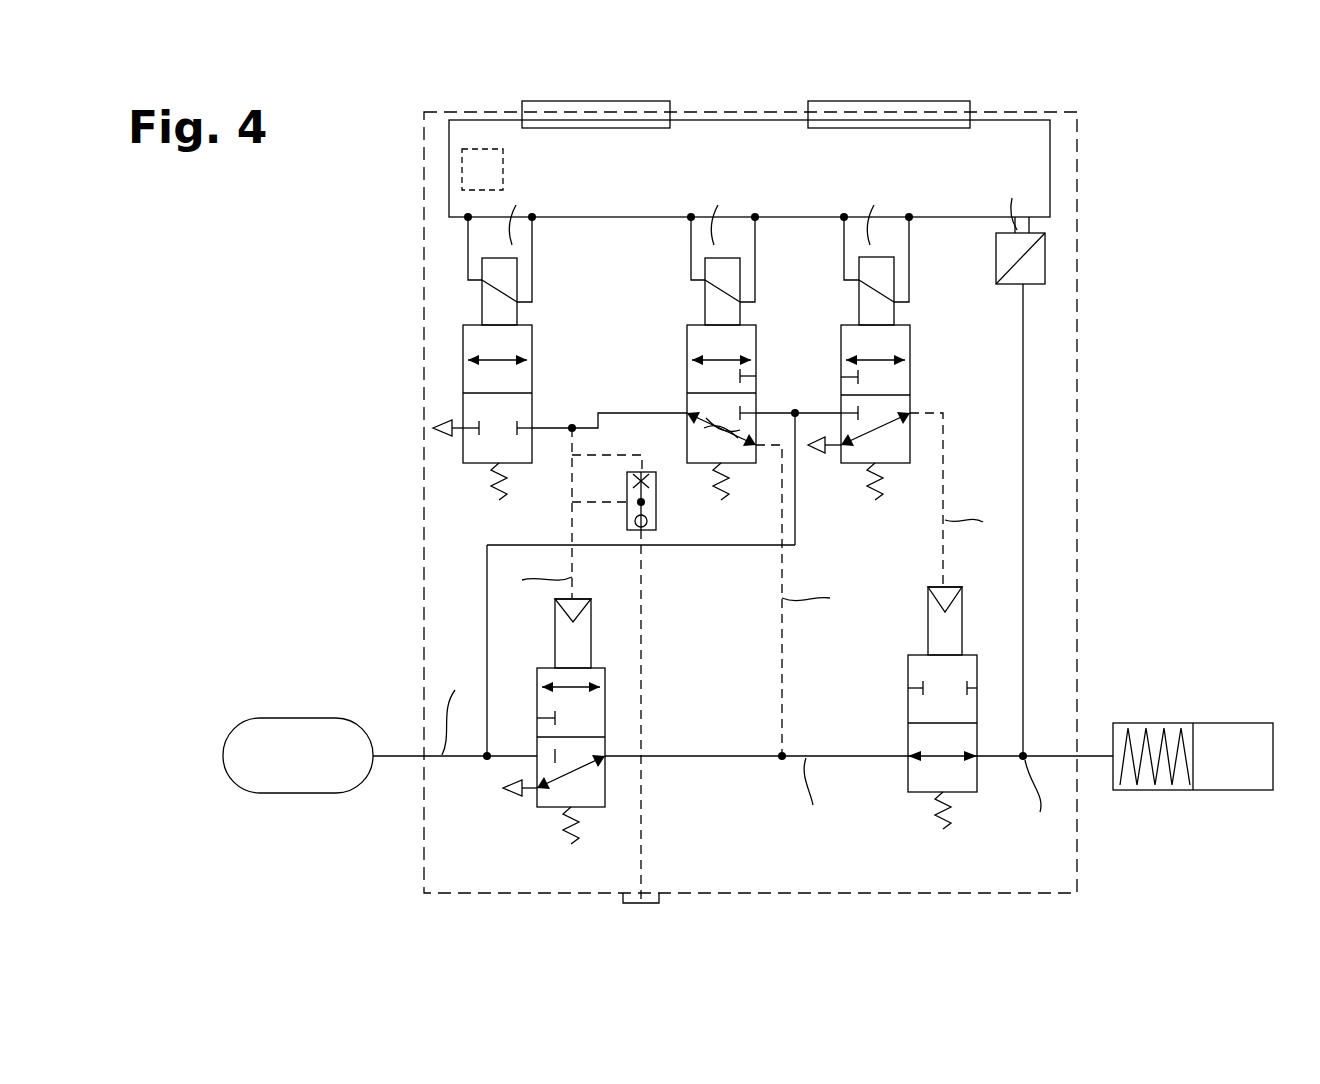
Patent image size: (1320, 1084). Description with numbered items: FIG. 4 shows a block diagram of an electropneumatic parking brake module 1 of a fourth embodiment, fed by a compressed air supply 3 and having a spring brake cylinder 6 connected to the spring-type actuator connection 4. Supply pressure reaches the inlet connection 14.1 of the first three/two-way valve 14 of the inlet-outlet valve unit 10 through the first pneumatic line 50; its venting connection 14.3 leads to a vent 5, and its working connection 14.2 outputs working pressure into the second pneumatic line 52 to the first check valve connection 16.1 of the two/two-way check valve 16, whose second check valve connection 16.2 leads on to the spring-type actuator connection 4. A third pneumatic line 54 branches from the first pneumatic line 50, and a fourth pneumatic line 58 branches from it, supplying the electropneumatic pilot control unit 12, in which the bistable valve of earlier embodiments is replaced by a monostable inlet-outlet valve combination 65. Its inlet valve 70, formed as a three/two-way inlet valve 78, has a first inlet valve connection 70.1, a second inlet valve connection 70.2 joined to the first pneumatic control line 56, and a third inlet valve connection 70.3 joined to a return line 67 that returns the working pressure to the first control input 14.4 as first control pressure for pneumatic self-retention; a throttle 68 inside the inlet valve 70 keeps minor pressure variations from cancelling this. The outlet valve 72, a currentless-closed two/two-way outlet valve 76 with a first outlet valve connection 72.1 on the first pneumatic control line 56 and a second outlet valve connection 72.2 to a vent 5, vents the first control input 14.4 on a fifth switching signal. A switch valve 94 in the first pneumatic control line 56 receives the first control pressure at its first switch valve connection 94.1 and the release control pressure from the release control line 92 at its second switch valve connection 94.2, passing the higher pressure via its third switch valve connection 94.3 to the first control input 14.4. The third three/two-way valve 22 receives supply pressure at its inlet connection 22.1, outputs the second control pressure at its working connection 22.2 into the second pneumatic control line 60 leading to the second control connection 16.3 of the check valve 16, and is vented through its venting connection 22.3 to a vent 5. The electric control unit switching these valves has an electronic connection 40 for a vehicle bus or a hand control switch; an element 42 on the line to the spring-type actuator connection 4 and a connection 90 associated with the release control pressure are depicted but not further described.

The electropneumatic parking brake module 1 is at (222, 318).
The compressed air supply 3 is at (302, 793).
The spring-type actuator connection 4 is at (1078, 755).
The vent 5 is at (436, 432).
The spring brake cylinder 6 is at (1195, 792).
The inlet-outlet valve unit 10 is at (775, 842).
The electropneumatic pilot control unit 12 is at (455, 312).
The first 3/2-way valve 14 is at (553, 666).
The inlet connection 14.1 is at (537, 755).
The working connection 14.2 is at (606, 760).
The venting connection 14.3 is at (538, 808).
The first control input 14.4 is at (575, 640).
The 2/2-way check valve 16 is at (922, 654).
The first check valve connection 16.1 is at (906, 755).
The second check valve connection 16.2 is at (978, 760).
The second control connection 16.3 is at (963, 618).
The third 3/2-way valve 22 is at (900, 325).
The inlet connection 22.1 is at (856, 412).
The working connection 22.2 is at (912, 413).
The venting connection 22.3 is at (836, 447).
The electronic connection 40 is at (483, 148).
The pressure sensor 42 is at (1046, 245).
The first pneumatic line 50 is at (512, 760).
The second pneumatic line 52 is at (847, 758).
The third pneumatic line 54 is at (487, 578).
The first pneumatic control line 56 is at (572, 522).
The fourth pneumatic line 58 is at (797, 420).
The second pneumatic control line 60 is at (945, 455).
The monostable inlet-outlet valve combination 65 is at (400, 243).
The return line 67 is at (782, 660).
The throttle 68 is at (657, 480).
The inlet valve 70 is at (730, 421).
The first inlet valve connection 70.1 is at (757, 378).
The second inlet valve connection 70.2 is at (690, 412).
The third inlet valve connection 70.3 is at (757, 448).
The outlet valve 72 is at (460, 410).
The first outlet valve connection 72.1 is at (535, 426).
The second outlet valve connection 72.2 is at (462, 426).
The 2/2-way outlet valve 76 is at (520, 325).
The 3/2-way inlet valve 78 is at (745, 322).
The load pressure port 90 is at (642, 905).
The release control line 92 is at (642, 865).
The switch valve 94 is at (657, 520).
The first switch valve connection 94.1 is at (641, 471).
The second switch valve connection 94.2 is at (648, 530).
The third switch valve connection 94.3 is at (626, 502).